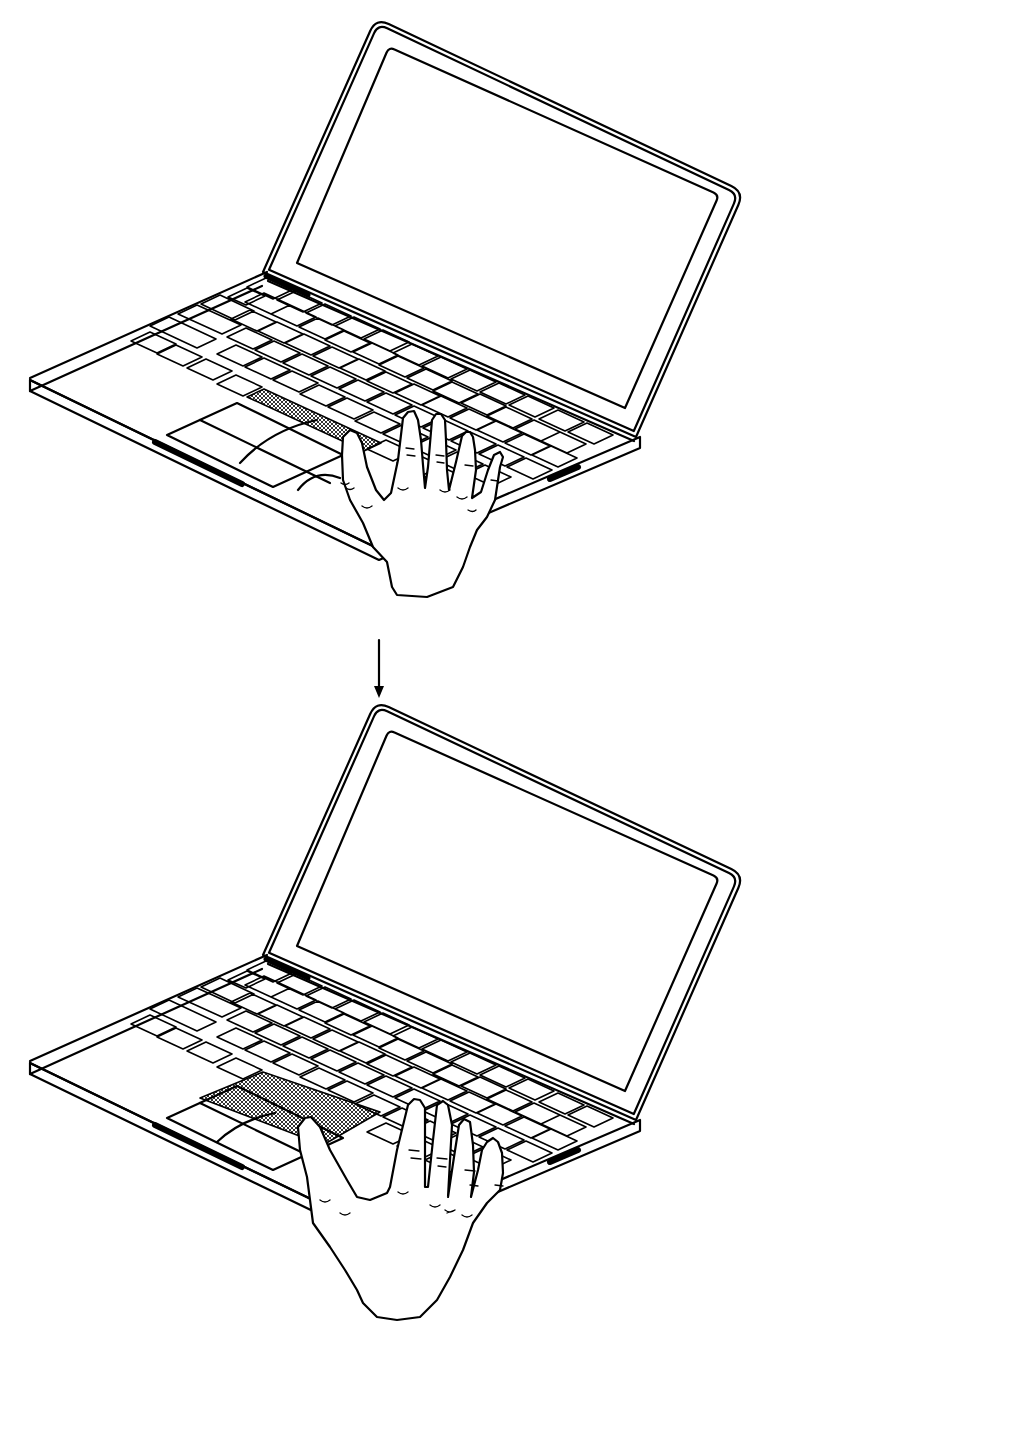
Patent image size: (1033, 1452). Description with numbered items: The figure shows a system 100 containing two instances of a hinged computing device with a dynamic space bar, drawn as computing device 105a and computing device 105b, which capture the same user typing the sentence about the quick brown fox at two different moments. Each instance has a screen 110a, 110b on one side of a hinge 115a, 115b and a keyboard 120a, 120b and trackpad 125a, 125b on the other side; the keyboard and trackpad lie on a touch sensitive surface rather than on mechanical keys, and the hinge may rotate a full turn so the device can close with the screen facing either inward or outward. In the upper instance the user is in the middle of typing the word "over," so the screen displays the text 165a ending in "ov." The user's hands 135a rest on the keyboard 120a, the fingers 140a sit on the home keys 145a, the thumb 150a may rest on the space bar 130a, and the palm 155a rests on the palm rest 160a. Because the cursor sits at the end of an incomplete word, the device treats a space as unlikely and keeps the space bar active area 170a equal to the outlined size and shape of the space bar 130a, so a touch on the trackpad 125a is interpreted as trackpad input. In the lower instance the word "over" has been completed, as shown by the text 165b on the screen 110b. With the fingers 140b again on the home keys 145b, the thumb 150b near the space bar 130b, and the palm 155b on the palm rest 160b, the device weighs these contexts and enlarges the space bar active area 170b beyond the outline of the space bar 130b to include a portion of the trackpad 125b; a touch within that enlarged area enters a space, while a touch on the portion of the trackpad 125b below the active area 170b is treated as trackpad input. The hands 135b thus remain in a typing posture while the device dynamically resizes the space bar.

The system 100 is at (451, 697).
The computing device 105a is at (405, 314).
The computing device 105b is at (405, 1012).
The screen 110a is at (514, 231).
The screen 110b is at (518, 914).
The hinge 115a is at (383, 427).
The hinge 115b is at (384, 1137).
The keyboard 120a is at (607, 488).
The keyboard 120b is at (607, 1174).
The trackpad 125a is at (204, 464).
The trackpad 125b is at (204, 1147).
The space bar 130a is at (268, 413).
The space bar 130b is at (268, 1104).
The hands 135a is at (452, 521).
The hands 135b is at (452, 1222).
The fingers 140a is at (509, 487).
The fingers 140b is at (508, 1184).
The home keys 145a is at (364, 381).
The home keys 145b is at (364, 1063).
The thumb 150a is at (255, 473).
The thumb 150b is at (255, 1156).
The palm 155a is at (477, 508).
The palm 155b is at (453, 1209).
The palm rest 160a is at (293, 501).
The palm rest 160b is at (260, 1187).
The text 165a is at (452, 181).
The text 165b is at (455, 871).
The space bar active area 170a is at (181, 475).
The space bar active area 170b is at (181, 1157).